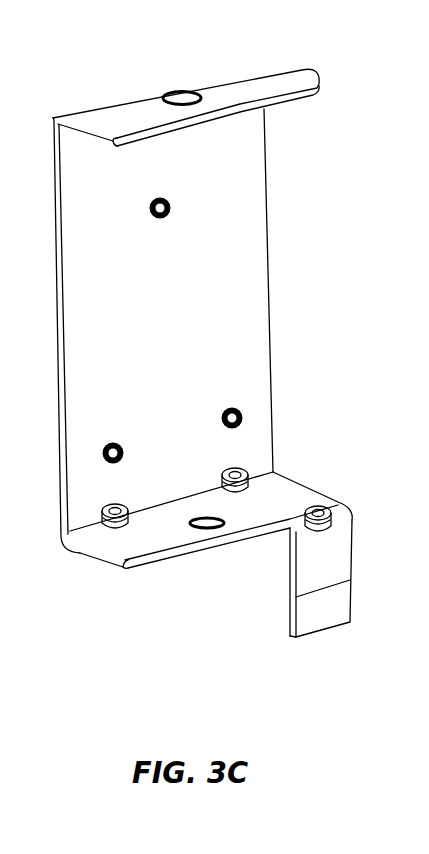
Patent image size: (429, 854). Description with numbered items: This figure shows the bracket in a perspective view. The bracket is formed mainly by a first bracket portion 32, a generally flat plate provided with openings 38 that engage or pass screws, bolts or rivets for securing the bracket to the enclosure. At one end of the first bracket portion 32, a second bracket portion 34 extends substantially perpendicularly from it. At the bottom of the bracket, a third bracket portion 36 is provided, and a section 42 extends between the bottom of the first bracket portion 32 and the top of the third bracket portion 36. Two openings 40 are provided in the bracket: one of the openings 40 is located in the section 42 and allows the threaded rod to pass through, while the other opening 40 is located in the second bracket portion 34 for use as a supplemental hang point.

The first bracket portion 32 is at (270, 292).
The second bracket portion 34 is at (288, 68).
The third bracket portion 36 is at (348, 580).
The openings 38 is at (171, 209).
The openings 40 is at (189, 86).
The section 42 is at (123, 545).